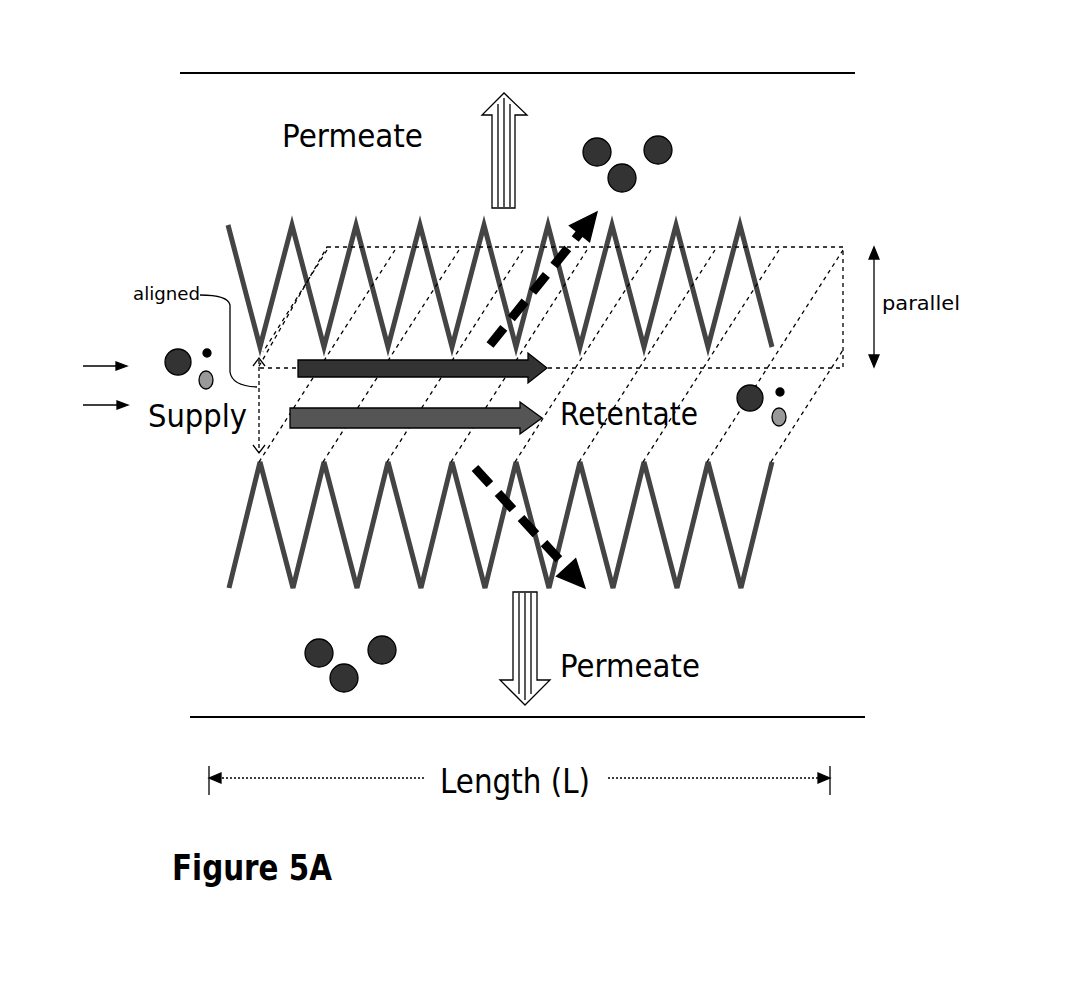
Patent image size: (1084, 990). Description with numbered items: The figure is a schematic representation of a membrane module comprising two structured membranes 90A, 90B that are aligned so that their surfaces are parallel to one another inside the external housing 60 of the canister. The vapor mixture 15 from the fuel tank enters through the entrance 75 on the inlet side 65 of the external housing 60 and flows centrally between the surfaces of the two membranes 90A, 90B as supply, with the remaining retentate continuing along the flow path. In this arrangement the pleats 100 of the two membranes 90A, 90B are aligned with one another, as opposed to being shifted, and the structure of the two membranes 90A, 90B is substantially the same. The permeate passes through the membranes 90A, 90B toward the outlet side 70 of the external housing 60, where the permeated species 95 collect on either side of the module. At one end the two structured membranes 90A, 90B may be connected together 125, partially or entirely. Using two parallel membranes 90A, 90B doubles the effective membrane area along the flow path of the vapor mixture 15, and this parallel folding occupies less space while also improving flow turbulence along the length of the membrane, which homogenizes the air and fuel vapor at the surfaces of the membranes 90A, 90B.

The external housing 60 is at (428, 72).
The outlet side 70 is at (550, 105).
The entrance 75 is at (85, 385).
The permeate particles 95 is at (627, 152).
The pleats 100 is at (503, 373).
The structured membrane 90A is at (758, 230).
The structured membrane 90B is at (790, 488).
The connection of the two structured membranes 125 is at (845, 337).
The inlet side 65 is at (597, 352).
The vapor mixture 15 is at (198, 355).